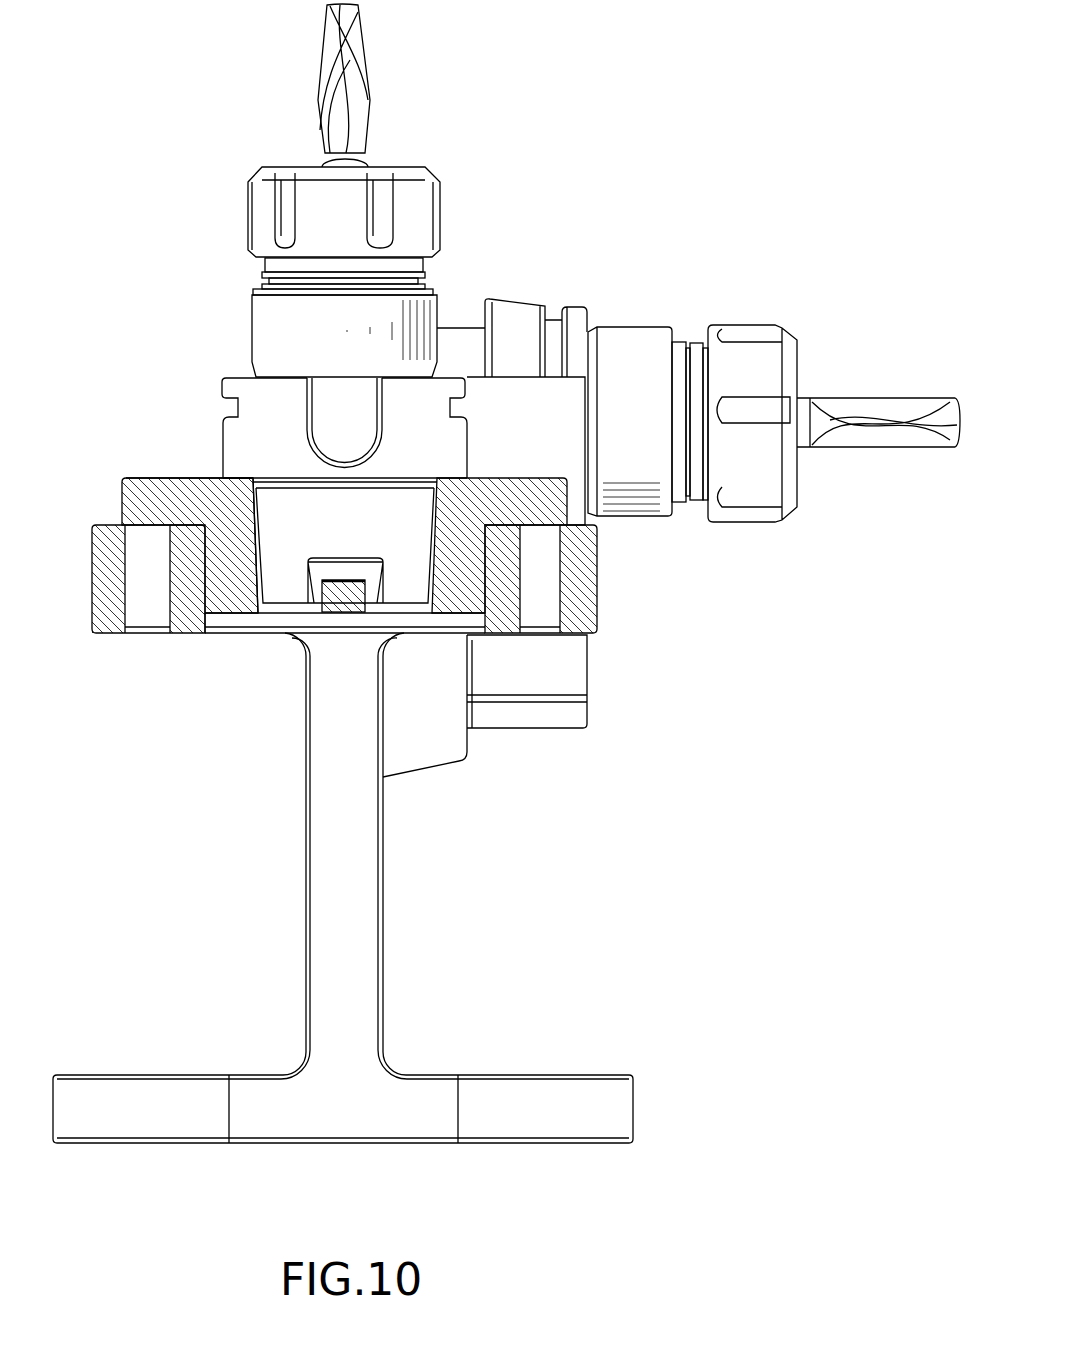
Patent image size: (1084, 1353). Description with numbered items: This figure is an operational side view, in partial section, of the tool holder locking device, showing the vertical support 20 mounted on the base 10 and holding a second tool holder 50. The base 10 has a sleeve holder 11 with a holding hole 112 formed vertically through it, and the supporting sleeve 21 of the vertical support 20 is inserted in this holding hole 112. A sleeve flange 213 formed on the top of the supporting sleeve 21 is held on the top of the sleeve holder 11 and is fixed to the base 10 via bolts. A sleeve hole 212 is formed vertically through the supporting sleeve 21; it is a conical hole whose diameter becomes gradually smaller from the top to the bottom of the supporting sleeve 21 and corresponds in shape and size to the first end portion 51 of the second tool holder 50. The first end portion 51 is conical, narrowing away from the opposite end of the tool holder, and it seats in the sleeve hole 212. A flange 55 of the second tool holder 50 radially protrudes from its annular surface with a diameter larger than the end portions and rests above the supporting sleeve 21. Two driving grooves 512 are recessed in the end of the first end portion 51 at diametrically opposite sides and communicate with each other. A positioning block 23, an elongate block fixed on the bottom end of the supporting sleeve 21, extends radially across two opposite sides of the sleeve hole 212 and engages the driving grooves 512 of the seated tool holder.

The base 10 is at (386, 907).
The sleeve holder 11 is at (395, 612).
The holding hole 112 is at (206, 627).
The vertical support 20 is at (305, 533).
The supporting sleeve 21 is at (125, 500).
The sleeve hole 212 is at (258, 580).
The sleeve flange 213 is at (200, 490).
The positioning block 23 is at (343, 578).
The second tool holder 50 is at (428, 160).
The first end portion 51 is at (359, 593).
The driving grooves 512 is at (366, 582).
The flange 55 is at (440, 450).